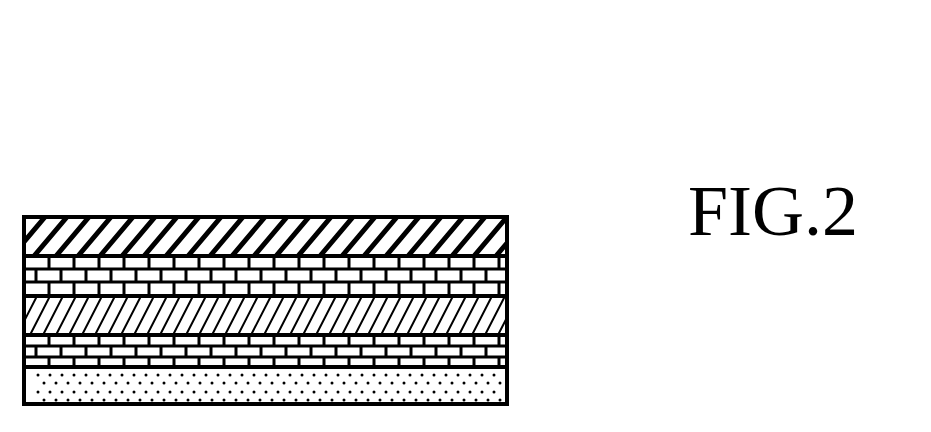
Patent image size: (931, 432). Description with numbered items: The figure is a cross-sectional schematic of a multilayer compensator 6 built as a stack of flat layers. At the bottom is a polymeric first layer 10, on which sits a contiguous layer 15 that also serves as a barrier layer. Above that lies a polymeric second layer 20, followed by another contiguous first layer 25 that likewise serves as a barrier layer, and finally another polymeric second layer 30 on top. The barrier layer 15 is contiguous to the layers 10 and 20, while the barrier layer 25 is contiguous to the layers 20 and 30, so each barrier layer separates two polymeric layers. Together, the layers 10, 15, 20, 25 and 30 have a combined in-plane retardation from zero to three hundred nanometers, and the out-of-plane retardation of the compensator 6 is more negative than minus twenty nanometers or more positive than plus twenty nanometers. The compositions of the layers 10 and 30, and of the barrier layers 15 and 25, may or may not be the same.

The multilayer compensator 6 is at (311, 125).
The polymeric first layer 10 is at (508, 383).
The contiguous layer (barrier layer) 15 is at (508, 347).
The polymeric second layer 20 is at (508, 312).
The contiguous first layer (barrier layer) 25 is at (508, 270).
The polymeric second layer 30 is at (508, 233).